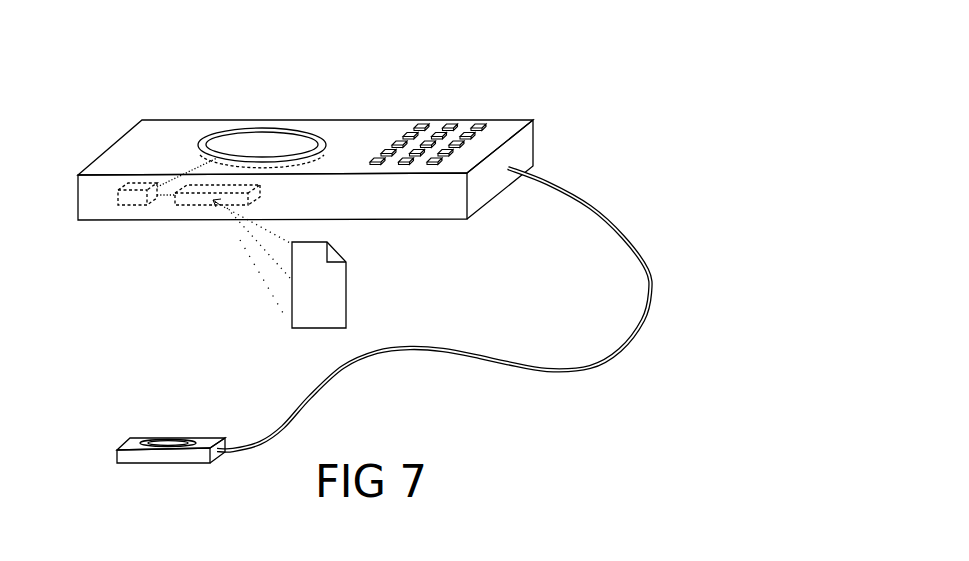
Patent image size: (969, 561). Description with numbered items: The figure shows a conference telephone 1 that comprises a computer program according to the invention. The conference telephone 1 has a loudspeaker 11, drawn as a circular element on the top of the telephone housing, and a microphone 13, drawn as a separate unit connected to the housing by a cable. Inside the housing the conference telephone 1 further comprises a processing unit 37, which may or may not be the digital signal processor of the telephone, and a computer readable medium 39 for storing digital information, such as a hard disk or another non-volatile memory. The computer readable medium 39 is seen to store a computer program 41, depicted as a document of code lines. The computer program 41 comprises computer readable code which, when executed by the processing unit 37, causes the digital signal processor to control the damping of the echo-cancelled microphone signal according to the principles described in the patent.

The conference telephone 1 is at (620, 118).
The loudspeaker 11 is at (264, 140).
The microphone 13 is at (165, 440).
The processing unit 37 is at (132, 205).
The computer readable medium 39 is at (198, 205).
The computer program 41 is at (338, 298).